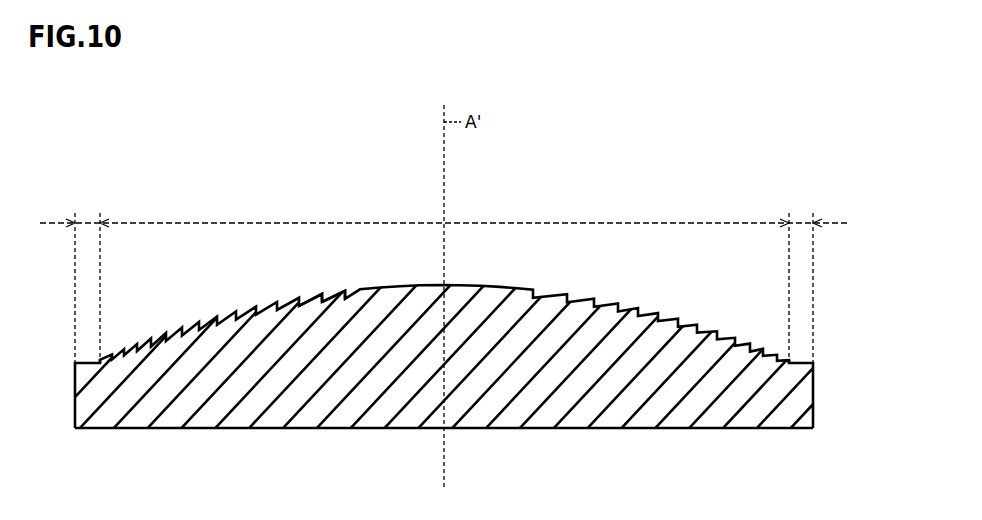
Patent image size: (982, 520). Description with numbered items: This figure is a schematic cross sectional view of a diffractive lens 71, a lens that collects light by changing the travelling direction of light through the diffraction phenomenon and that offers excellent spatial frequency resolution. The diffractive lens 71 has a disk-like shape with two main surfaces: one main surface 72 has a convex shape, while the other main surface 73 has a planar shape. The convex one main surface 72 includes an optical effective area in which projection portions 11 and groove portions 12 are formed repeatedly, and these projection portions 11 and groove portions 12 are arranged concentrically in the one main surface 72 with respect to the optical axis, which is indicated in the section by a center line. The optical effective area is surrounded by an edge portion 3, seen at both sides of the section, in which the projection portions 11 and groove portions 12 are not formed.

The diffractive lens 71 is at (738, 122).
The one main surface 72 is at (407, 284).
The other main surface 73 is at (360, 430).
The projection portions 11 is at (352, 291).
The groove portions 12 is at (329, 294).
The edge portion 3 is at (87, 222).